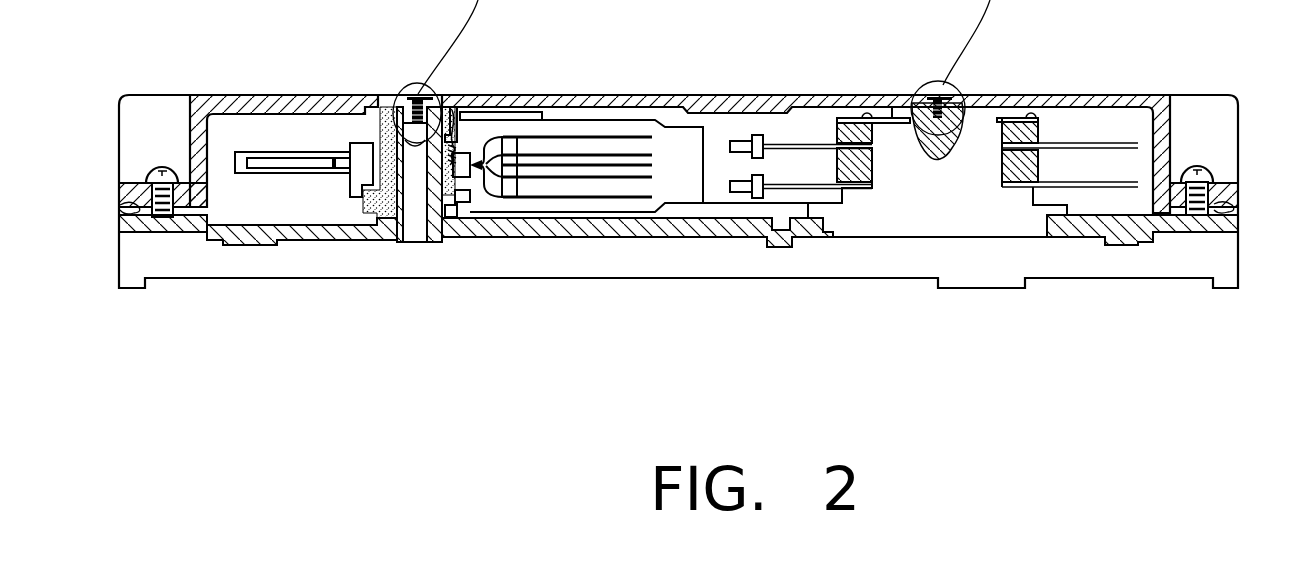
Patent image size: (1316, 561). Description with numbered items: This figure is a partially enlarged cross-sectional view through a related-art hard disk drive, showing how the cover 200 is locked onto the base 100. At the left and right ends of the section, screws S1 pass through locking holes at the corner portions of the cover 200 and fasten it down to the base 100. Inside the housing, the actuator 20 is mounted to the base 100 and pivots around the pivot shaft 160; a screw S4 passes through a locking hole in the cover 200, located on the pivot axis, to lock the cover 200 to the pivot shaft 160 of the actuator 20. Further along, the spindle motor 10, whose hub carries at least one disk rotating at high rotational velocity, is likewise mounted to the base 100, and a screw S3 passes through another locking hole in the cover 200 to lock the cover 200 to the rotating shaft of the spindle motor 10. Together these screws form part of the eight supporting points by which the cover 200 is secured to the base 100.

The base 100 is at (724, 290).
The cover 200 is at (387, 100).
The screw S1 is at (163, 167).
The actuator 20 is at (324, 142).
The screw S4 is at (417, 96).
The pivot shaft 160 is at (438, 96).
The spindle motor 10 is at (917, 112).
The screw S3 is at (940, 96).